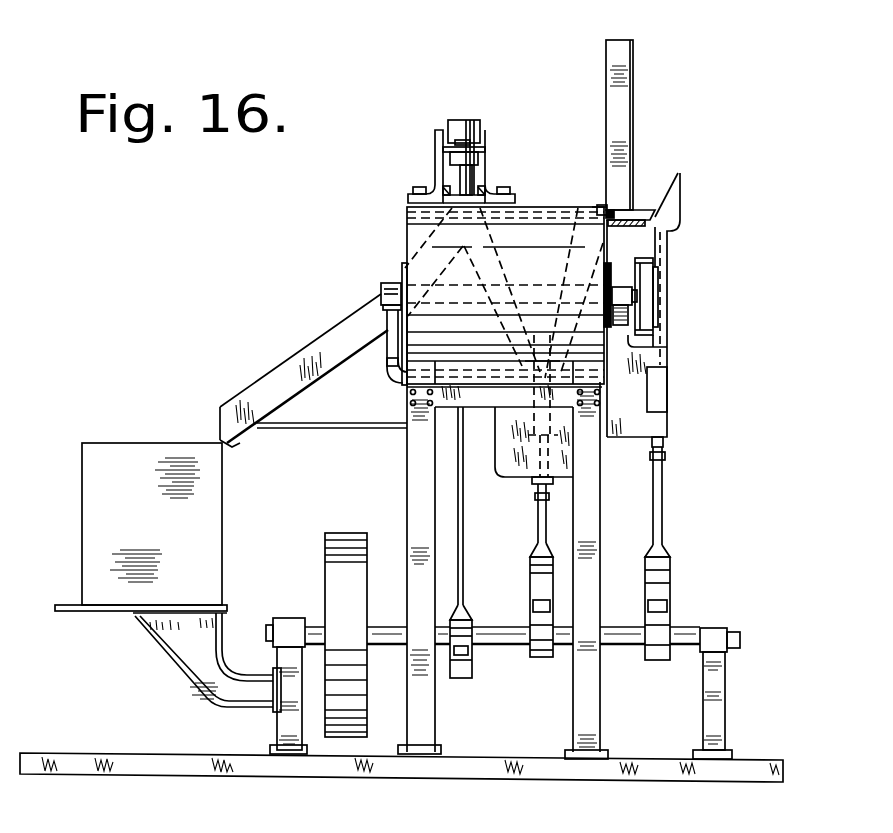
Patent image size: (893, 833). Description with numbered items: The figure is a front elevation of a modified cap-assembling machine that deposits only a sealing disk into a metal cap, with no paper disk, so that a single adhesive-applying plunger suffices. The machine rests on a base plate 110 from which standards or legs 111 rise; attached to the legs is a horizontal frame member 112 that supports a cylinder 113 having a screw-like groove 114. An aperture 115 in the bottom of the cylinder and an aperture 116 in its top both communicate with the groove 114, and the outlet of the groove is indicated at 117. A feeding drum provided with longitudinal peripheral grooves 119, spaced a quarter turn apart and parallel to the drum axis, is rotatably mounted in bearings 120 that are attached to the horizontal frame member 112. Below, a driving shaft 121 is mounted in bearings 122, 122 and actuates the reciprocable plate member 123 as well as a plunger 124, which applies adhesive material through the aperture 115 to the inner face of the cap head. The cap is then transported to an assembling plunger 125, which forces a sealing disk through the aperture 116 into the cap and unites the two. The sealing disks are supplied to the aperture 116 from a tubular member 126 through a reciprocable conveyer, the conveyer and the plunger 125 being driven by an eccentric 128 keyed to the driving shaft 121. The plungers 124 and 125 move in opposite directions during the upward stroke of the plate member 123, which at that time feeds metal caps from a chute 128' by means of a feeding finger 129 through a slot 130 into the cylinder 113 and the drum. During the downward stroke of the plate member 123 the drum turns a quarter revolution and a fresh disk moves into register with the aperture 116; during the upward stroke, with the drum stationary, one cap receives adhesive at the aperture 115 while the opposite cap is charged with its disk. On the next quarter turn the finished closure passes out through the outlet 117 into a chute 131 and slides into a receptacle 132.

The base plate 110 is at (647, 770).
The standards or legs 111 is at (407, 493).
The horizontal frame member 112 is at (481, 400).
The cylinder 113 is at (542, 218).
The groove 114 is at (572, 268).
The aperture in the bottom of the cylinder 115 is at (533, 388).
The aperture in the top of the cylinder 116 is at (493, 192).
The outlet of the groove 117 is at (384, 283).
The longitudinal peripheral grooves 119 is at (488, 287).
The bearings 120 is at (391, 343).
The driving shaft 121 is at (620, 638).
The bearings 122 is at (290, 622).
The reciprocable plate member 123 is at (660, 386).
The plunger 124 is at (528, 456).
The assembling plunger 125 is at (460, 180).
The tubular member 126 is at (455, 121).
The eccentric 128 is at (485, 542).
The chute 128' is at (646, 125).
The feeding finger 129 is at (647, 210).
The slot 130 is at (600, 208).
The chute 131 is at (286, 373).
The receptacle 132 is at (208, 503).